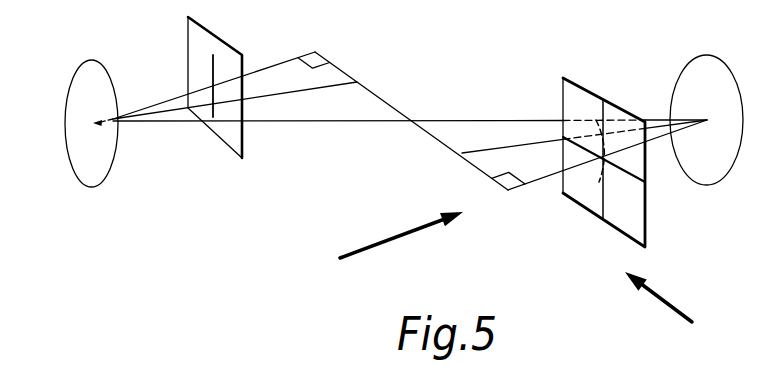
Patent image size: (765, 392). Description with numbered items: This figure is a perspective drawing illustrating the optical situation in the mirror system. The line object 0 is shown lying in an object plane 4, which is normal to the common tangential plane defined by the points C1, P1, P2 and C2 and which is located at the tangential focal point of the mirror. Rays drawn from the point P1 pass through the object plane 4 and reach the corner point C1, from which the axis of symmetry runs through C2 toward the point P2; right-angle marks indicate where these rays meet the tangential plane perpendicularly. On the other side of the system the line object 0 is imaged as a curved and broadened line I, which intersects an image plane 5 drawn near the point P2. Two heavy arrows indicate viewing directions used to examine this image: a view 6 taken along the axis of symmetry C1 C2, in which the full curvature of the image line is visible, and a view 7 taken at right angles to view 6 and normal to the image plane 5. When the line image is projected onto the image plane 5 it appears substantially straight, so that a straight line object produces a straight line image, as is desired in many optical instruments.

The object plane 4 is at (202, 41).
The line object 0 is at (218, 70).
The image plane 5 is at (632, 200).
The curved and broadened line image I is at (598, 183).
The view along the axis of symmetry 6 is at (682, 310).
The view normal to the image plane 7 is at (402, 240).
The corner point of the common tangential plane C1 is at (375, 76).
The corner point of the common tangential plane C2 is at (430, 162).
The point of the common tangential plane P1 is at (91, 123).
The point of the common tangential plane P2 is at (706, 120).